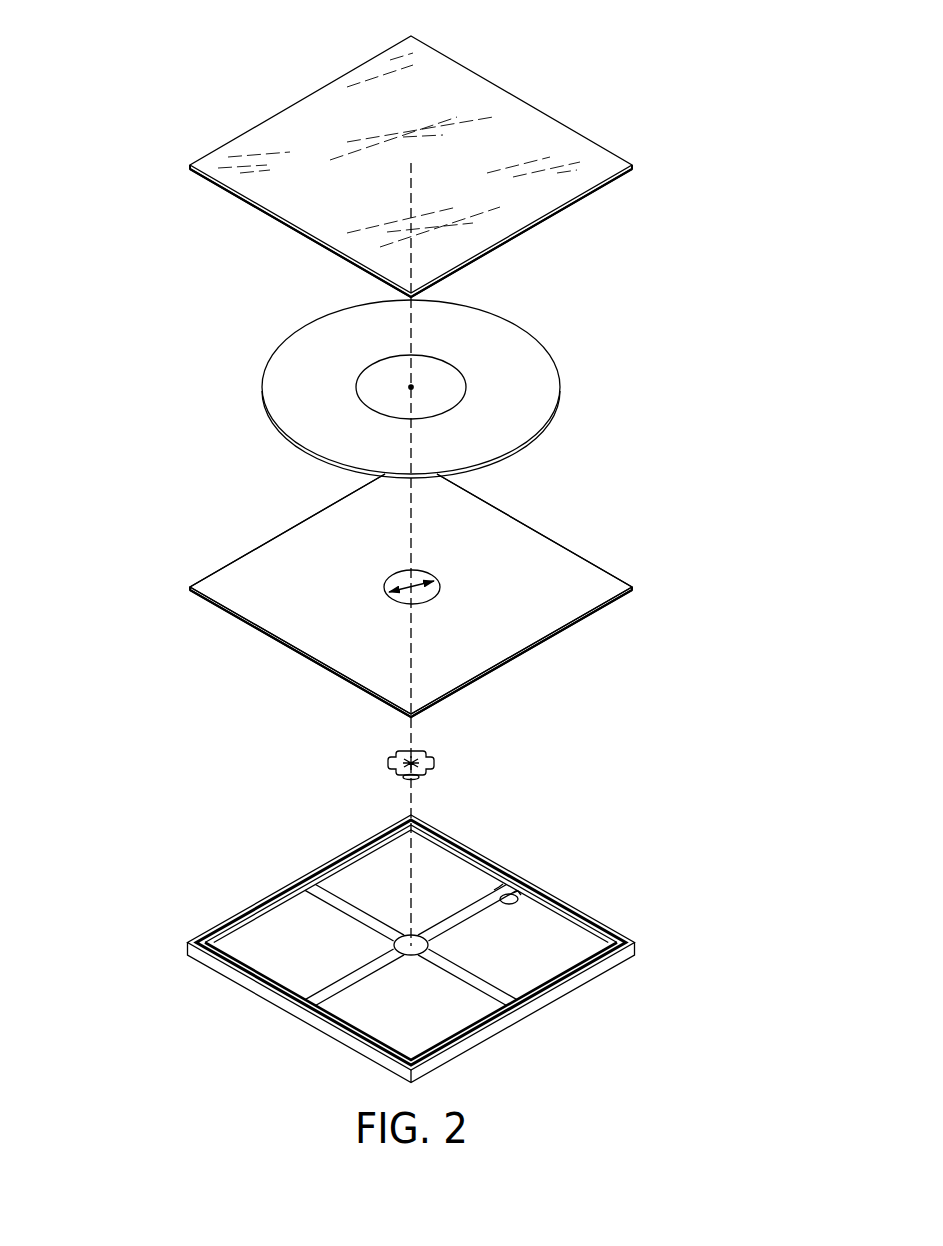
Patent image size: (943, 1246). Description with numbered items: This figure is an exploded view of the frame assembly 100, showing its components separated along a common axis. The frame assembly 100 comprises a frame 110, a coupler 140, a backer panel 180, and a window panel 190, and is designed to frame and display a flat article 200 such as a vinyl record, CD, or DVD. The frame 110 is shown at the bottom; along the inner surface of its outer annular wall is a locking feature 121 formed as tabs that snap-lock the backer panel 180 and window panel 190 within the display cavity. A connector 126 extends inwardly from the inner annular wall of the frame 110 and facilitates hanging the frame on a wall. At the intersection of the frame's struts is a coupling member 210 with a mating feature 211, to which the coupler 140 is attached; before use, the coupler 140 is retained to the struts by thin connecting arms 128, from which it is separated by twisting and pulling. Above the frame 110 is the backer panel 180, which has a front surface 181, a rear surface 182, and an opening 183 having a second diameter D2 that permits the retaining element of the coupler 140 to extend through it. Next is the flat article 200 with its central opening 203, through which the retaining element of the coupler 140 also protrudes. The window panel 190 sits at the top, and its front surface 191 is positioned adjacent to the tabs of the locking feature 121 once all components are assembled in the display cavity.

The frame assembly 100 is at (123, 183).
The frame 110 is at (627, 952).
The locking feature 121 is at (227, 920).
The connector 126 is at (510, 893).
The connecting arms 128 is at (377, 942).
The coupler 140 is at (433, 758).
The backer panel 180 is at (597, 582).
The front surface 181 is at (263, 580).
The rear surface 182 is at (580, 622).
The opening 183 is at (393, 573).
The window panel 190 is at (567, 162).
The front surface 191 is at (487, 100).
The flat article 200 is at (513, 343).
The opening 203 is at (413, 387).
The coupling member 210 is at (398, 922).
The mating feature 211 is at (432, 947).
The second diameter D2 is at (415, 588).